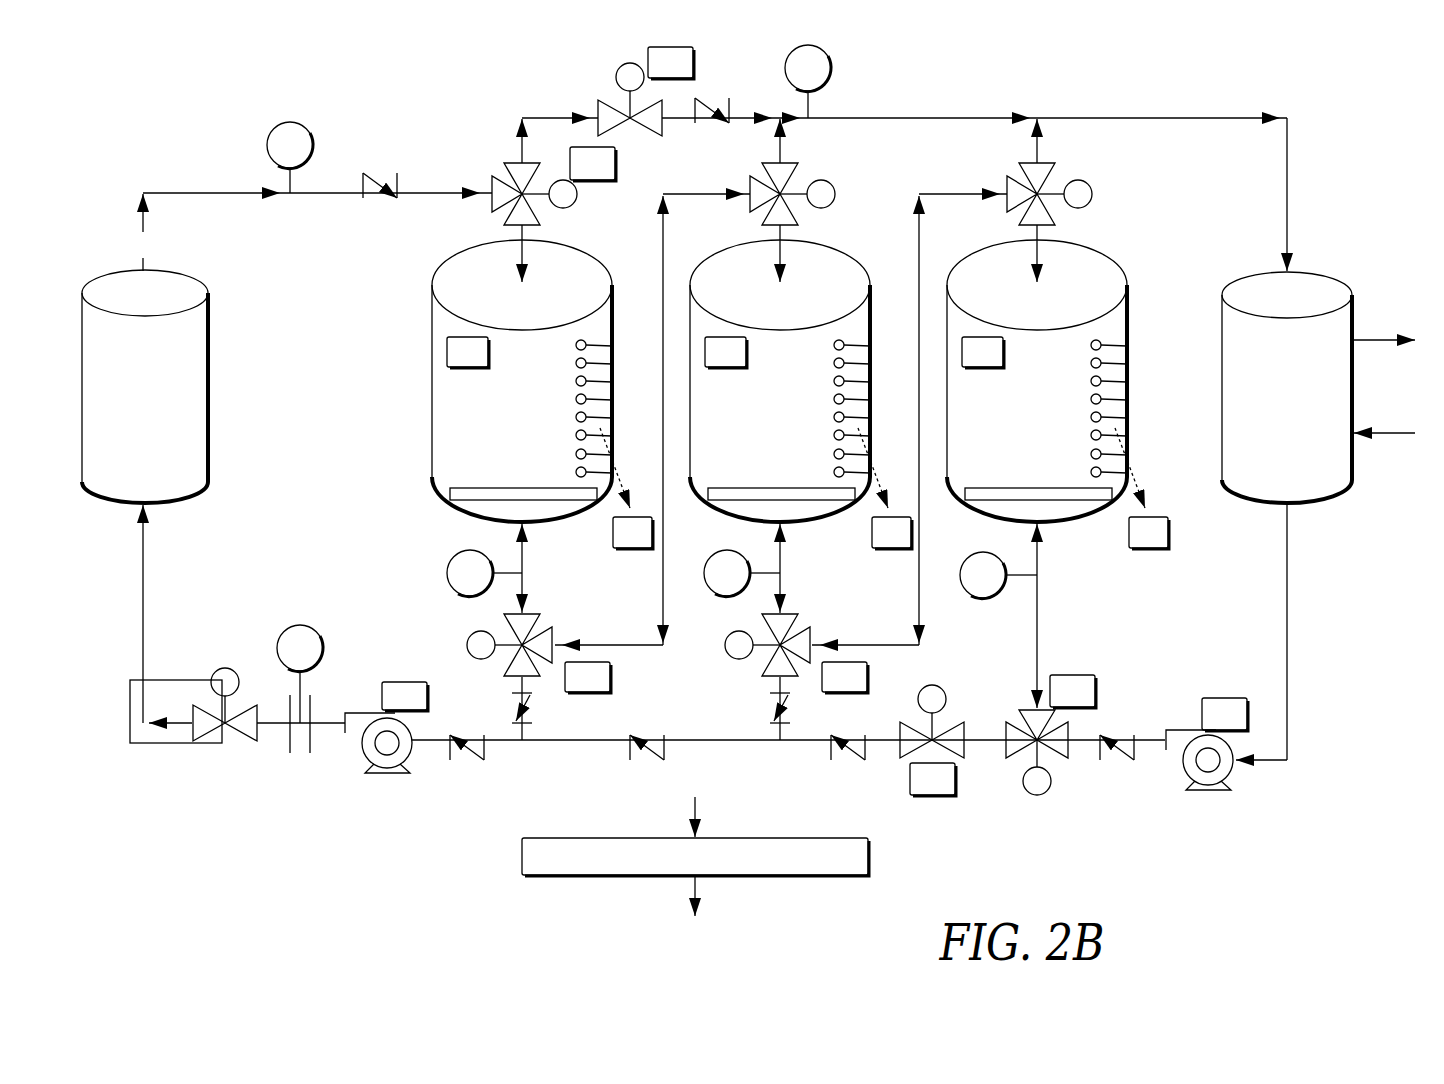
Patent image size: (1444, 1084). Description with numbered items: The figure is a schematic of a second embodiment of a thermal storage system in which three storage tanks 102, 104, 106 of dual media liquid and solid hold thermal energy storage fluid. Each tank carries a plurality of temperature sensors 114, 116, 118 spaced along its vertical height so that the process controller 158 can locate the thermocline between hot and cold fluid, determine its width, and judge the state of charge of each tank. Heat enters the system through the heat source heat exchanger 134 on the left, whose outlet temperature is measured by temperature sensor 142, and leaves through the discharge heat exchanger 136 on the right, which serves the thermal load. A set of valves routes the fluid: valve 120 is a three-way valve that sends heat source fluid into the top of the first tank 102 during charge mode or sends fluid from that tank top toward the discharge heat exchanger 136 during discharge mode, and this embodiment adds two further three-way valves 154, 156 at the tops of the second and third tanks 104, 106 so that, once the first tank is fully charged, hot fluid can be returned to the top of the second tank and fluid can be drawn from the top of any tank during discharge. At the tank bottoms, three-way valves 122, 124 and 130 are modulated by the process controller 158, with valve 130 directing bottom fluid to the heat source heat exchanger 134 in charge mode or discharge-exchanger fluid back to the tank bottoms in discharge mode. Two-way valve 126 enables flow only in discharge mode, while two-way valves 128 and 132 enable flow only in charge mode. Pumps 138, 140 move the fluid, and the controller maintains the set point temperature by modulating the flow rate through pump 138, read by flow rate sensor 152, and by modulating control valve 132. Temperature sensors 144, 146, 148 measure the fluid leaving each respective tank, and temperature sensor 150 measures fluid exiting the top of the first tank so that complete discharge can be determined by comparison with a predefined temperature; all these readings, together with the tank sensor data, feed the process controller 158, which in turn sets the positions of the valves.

The first storage tank 102 is at (570, 248).
The second storage tank 104 is at (828, 248).
The third storage tank 106 is at (1100, 250).
The plurality of temperature sensors 114 is at (600, 375).
The plurality of temperature sensors 116 is at (858, 375).
The plurality of temperature sensors 118 is at (1115, 375).
The valve 120 is at (615, 163).
The valve 122 is at (590, 692).
The valve 124 is at (848, 692).
The valve 126 is at (693, 62).
The valve 128 is at (933, 795).
The valve 130 is at (1075, 675).
The valve 132 is at (155, 743).
The heat source heat exchanger 134 is at (205, 284).
The discharge heat exchanger 136 is at (1323, 273).
The pump 138 is at (375, 774).
The pump 140 is at (1218, 790).
The temperature sensor 142 is at (288, 121).
The temperature sensor 144 is at (460, 551).
The temperature sensor 146 is at (718, 551).
The temperature sensor 148 is at (978, 551).
The temperature sensor 150 is at (831, 66).
The flow rate sensor 152 is at (296, 626).
The valve 154 is at (793, 165).
The valve 156 is at (1050, 165).
The process controller 158 is at (868, 857).